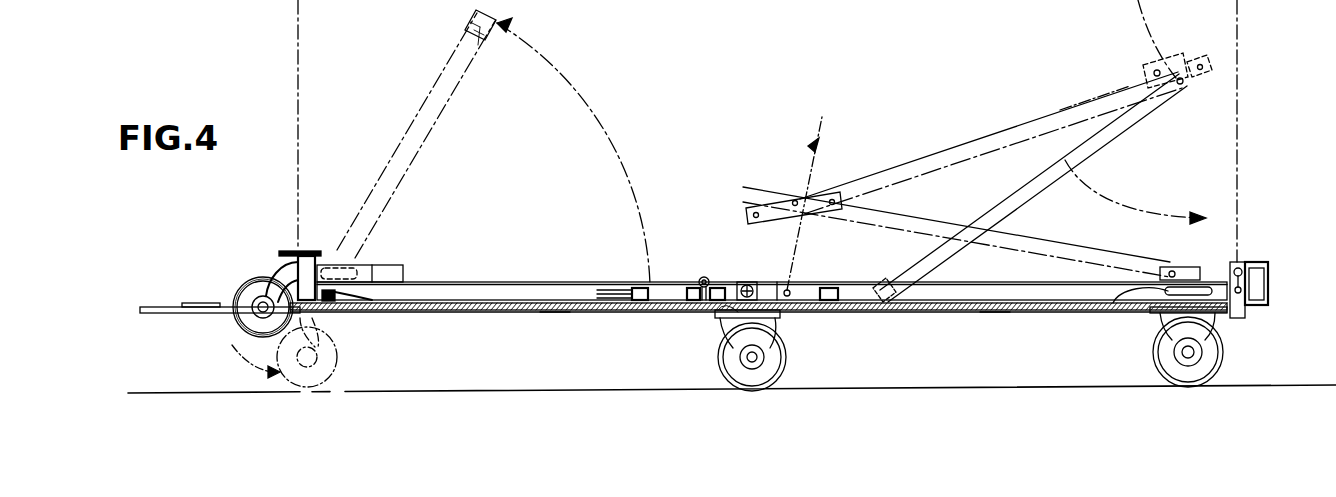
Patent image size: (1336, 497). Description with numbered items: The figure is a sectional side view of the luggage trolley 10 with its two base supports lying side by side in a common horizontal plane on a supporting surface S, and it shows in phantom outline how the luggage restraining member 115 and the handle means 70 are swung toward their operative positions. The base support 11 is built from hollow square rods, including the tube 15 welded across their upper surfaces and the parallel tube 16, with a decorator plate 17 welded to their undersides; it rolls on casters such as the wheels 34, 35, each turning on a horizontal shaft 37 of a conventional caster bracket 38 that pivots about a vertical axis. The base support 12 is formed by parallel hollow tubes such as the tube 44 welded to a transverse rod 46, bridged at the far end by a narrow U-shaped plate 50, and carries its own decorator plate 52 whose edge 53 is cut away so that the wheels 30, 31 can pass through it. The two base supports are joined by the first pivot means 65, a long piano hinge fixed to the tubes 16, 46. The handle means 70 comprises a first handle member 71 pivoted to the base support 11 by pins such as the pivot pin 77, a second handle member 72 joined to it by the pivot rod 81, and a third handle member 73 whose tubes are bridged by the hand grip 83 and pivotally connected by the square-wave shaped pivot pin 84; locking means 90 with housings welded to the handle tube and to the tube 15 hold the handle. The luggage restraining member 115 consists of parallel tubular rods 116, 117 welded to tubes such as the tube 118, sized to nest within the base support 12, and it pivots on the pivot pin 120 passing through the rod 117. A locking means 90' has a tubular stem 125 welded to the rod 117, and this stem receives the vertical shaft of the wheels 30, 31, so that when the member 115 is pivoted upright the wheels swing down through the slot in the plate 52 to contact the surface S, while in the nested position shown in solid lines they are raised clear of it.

The luggage trolley 10 is at (1264, 52).
The base support 11 is at (938, 320).
The base support 12 is at (495, 320).
The hollow square tube 15 is at (1246, 264).
The hollow tube 16 is at (720, 285).
The decorator plate 17 is at (996, 313).
The wheel 30 is at (247, 322).
The wheel 31 is at (263, 307).
The wheel 34 is at (776, 357).
The wheel 35 is at (1216, 340).
The horizontal shaft 37 is at (760, 355).
The caster bracket 38 is at (712, 320).
The hollow square tube 44 is at (660, 282).
The transverse rod 46 is at (690, 287).
The U-shaped plate 50 is at (288, 250).
The decorator plate 52 is at (555, 313).
The edge 53 is at (200, 303).
The first pivot means 65 is at (704, 277).
The handle means 70 is at (977, 151).
The first handle member 71 is at (905, 222).
The second handle member 72 is at (982, 135).
The third handle member 73 is at (1035, 195).
The pivot pin 77 is at (1258, 298).
The pivot rod 81 is at (787, 290).
The hand grip 83 is at (832, 287).
The pivot pin 84 is at (1113, 303).
The locking means 90 is at (1013, 255).
The locking means 90' is at (388, 215).
The luggage restraining member 115 is at (440, 106).
The tubular rod 116 is at (640, 302).
The tubular rod 117 is at (372, 300).
The tube 118 is at (458, 282).
The pivot pin 120 is at (310, 314).
The tubular stem 125 is at (362, 262).
The supporting surface S is at (575, 387).